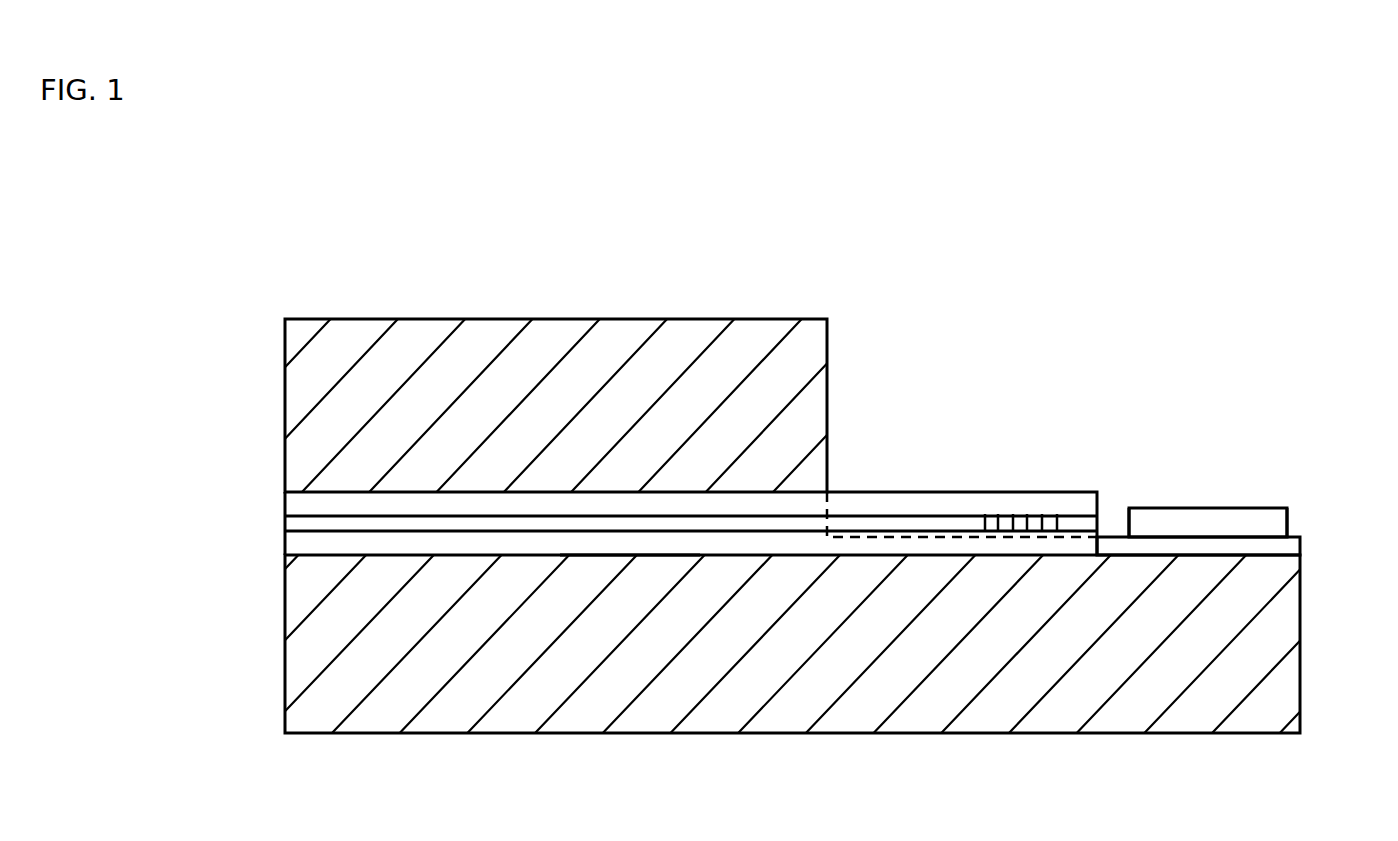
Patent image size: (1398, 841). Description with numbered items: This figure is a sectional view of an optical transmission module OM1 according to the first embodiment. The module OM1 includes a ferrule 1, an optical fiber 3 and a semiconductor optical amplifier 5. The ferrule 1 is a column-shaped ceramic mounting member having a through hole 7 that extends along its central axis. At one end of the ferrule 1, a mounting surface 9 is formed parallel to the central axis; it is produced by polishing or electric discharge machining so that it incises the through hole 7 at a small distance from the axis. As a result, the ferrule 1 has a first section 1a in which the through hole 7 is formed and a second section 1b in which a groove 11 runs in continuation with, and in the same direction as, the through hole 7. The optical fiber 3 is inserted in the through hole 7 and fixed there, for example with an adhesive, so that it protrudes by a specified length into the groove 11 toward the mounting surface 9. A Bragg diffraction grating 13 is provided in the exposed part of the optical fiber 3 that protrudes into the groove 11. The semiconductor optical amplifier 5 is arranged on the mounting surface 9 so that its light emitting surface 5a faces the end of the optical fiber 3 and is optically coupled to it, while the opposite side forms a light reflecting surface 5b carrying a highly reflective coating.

The optical transmission module OM1 is at (1084, 246).
The ferrule 1 is at (268, 668).
The first section 1a is at (565, 718).
The second section 1b is at (1052, 712).
The optical fiber 3 is at (883, 491).
The semiconductor optical amplifier 5 is at (1245, 508).
The light emitting surface 5a is at (1126, 521).
The light reflecting surface 5b is at (1290, 524).
The through hole 7 is at (593, 555).
The mounting surface 9 is at (1110, 535).
The groove 11 is at (1292, 545).
The Bragg diffraction grating 13 is at (1065, 510).